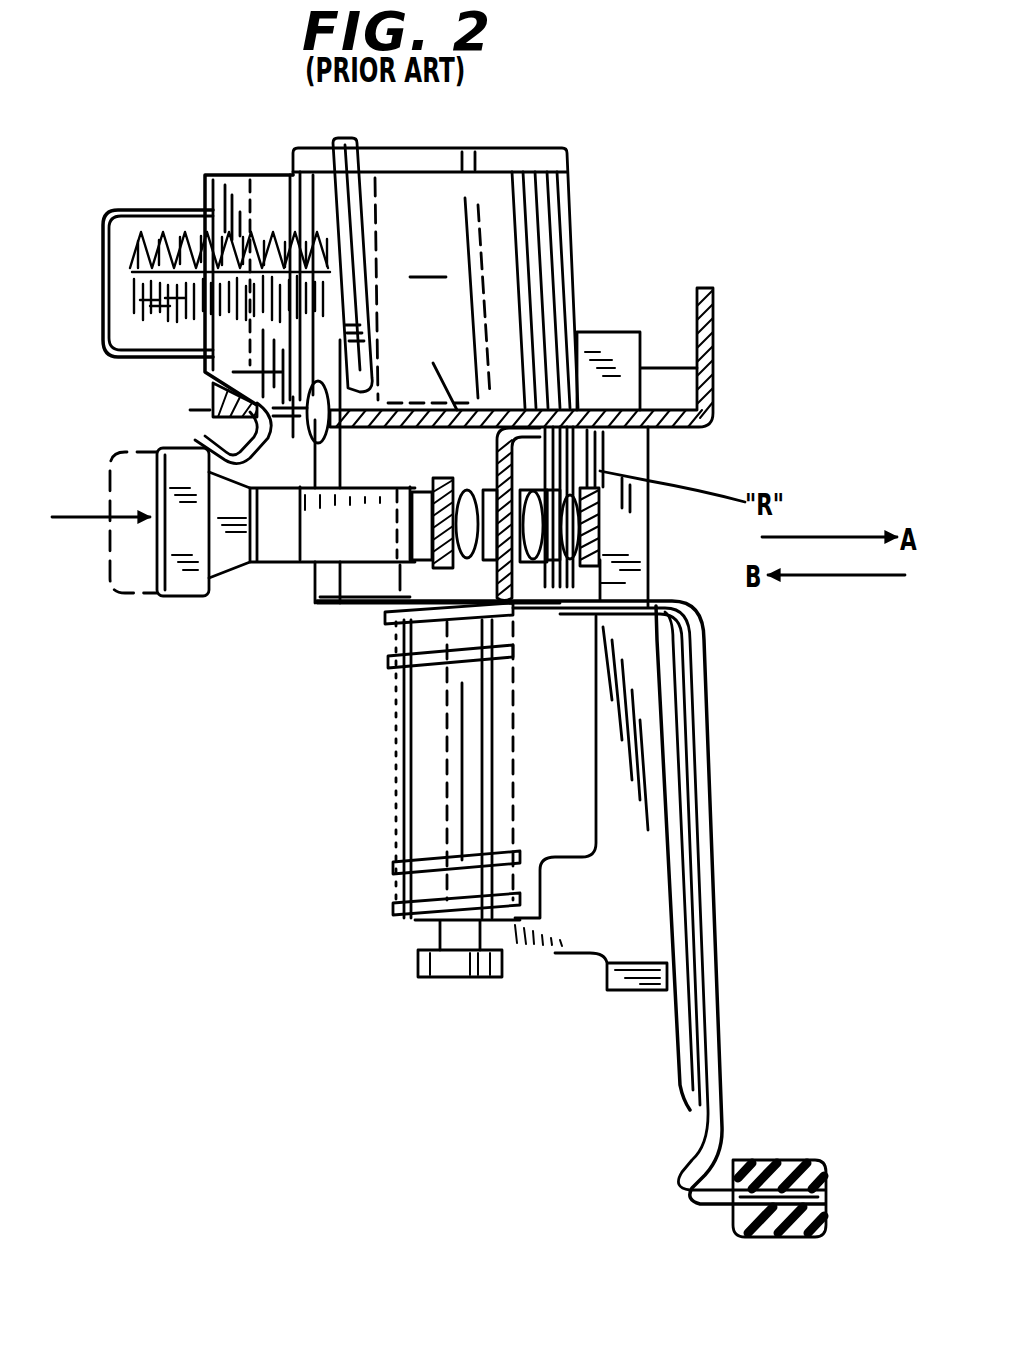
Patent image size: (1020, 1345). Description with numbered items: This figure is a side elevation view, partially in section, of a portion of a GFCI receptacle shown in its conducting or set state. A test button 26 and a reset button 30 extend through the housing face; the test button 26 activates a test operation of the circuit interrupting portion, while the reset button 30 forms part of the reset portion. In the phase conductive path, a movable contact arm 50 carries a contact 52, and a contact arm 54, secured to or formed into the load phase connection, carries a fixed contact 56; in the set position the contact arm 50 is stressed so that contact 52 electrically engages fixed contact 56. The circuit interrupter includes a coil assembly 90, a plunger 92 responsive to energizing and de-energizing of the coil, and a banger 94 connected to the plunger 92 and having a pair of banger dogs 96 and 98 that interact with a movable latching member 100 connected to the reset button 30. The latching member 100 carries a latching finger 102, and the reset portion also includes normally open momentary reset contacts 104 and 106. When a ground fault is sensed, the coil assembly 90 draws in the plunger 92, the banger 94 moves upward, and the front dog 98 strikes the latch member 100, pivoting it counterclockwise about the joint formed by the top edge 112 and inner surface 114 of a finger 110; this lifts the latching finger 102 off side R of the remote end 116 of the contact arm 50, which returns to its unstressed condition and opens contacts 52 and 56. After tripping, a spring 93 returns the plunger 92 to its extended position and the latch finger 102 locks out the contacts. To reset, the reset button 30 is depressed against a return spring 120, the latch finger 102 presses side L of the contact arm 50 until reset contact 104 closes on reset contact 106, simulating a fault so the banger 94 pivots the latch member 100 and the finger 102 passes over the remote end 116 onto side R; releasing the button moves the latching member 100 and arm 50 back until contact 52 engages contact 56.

The test button 26 is at (152, 468).
The reset button 30 is at (100, 225).
The contact arm 50 is at (718, 797).
The contact 52 is at (502, 606).
The contact arm 54 is at (445, 568).
The fixed contact 56 is at (467, 478).
The coil assembly 90 is at (391, 370).
The plunger 92 is at (508, 752).
The spring 93 is at (395, 868).
The banger 94 is at (675, 930).
The banger dog 96 is at (697, 368).
The banger front dog 98 is at (632, 575).
The latching member 100 is at (710, 298).
The latching finger 102 is at (580, 462).
The reset contact 104 is at (600, 476).
The reset contact 106 is at (600, 520).
The finger 110 is at (251, 492).
The top edge 112 is at (238, 412).
The inner surface 114 is at (240, 458).
The remote end 116 is at (577, 325).
The return spring 120 is at (150, 303).